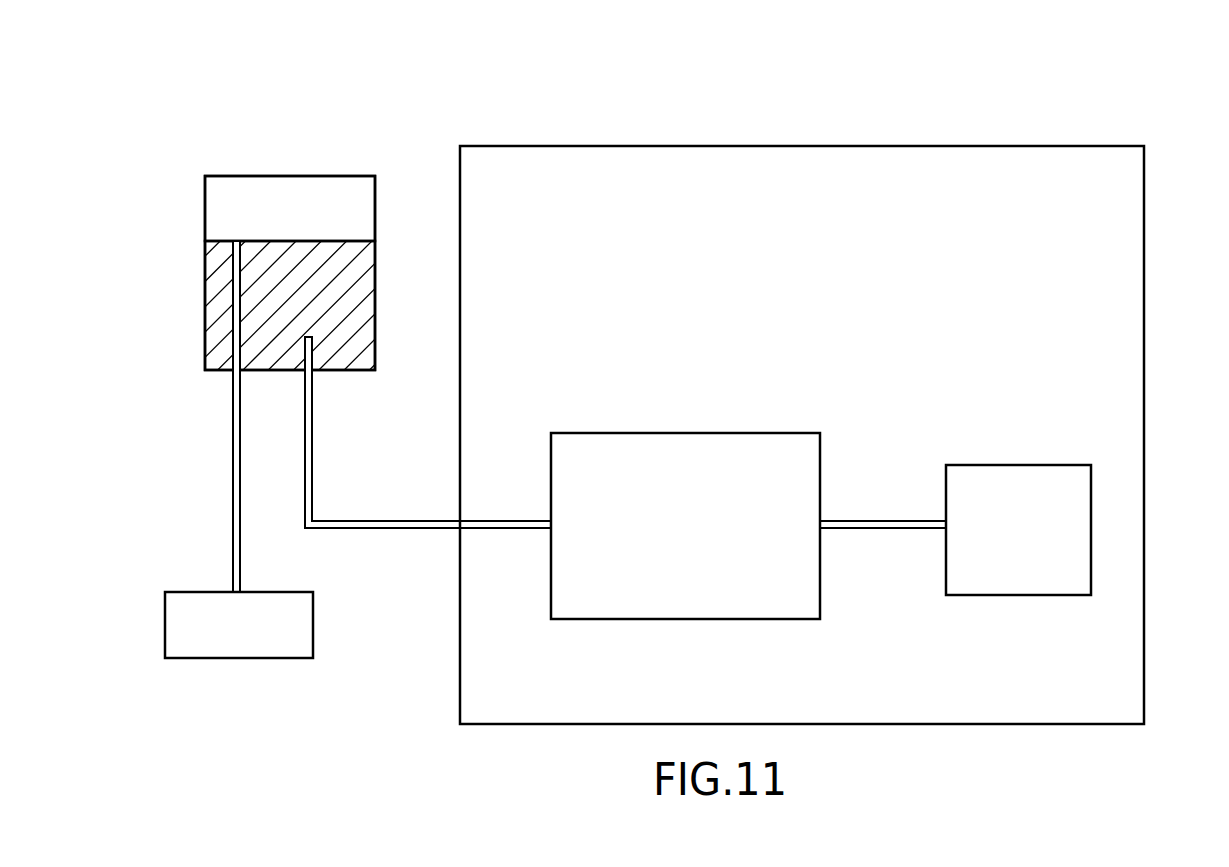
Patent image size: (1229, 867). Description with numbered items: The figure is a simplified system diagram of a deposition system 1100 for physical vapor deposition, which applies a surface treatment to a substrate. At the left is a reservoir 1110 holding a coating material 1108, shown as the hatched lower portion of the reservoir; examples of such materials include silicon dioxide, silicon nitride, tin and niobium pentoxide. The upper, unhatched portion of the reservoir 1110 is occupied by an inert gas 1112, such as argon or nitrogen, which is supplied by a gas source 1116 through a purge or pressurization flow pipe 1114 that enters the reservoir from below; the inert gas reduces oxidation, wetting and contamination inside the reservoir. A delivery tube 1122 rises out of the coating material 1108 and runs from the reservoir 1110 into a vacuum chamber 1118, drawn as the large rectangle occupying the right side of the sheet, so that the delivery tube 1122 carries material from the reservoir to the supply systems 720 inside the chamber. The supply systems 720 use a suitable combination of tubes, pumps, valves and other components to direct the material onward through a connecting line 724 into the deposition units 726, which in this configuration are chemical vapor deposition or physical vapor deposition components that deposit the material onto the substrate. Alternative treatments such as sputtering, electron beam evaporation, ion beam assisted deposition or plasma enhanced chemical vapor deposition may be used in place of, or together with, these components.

The deposition system 1100 is at (311, 111).
The reservoir 1110 is at (205, 208).
The inert gas 1112 is at (375, 212).
The coating material 1108 is at (375, 330).
The purge or pressurization flow pipe 1114 is at (233, 431).
The gas source 1116 is at (193, 592).
The delivery tube 1122 is at (312, 450).
The vacuum chamber 1118 is at (1145, 213).
The supply systems 720 is at (668, 619).
The supply line 724 is at (887, 521).
The deposition units 726 is at (998, 595).